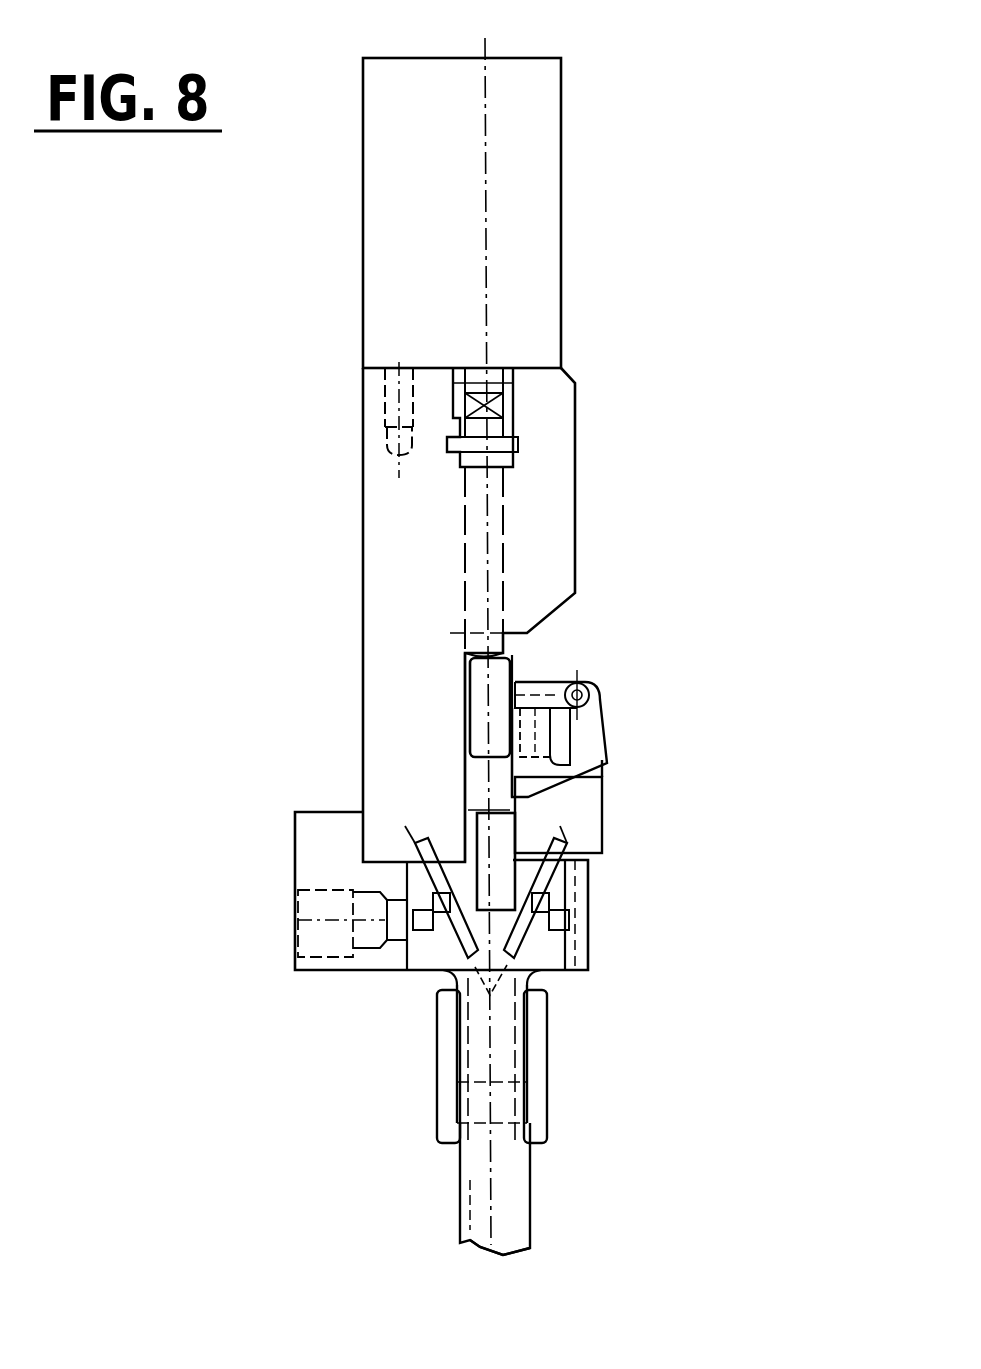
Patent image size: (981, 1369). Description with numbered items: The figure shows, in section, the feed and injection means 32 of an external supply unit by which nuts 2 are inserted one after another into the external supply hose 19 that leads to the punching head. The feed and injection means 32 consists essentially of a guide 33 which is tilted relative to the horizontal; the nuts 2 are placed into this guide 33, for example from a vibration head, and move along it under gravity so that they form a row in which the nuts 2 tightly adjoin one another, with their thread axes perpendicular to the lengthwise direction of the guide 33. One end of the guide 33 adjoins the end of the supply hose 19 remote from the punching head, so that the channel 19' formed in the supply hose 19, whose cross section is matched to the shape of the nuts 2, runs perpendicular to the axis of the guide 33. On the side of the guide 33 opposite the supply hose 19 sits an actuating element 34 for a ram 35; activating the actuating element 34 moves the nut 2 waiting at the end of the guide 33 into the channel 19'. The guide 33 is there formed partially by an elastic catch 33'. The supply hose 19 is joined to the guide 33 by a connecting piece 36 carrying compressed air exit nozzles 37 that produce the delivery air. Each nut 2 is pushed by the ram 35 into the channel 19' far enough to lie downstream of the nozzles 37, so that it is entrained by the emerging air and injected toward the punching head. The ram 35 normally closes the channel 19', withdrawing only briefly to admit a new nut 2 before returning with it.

The nut 2 is at (497, 673).
The supply hose 19 is at (548, 1116).
The channel 19' is at (571, 1273).
The feed and injection means 32 is at (590, 340).
The guide 33 is at (330, 757).
The elastic catch 33' is at (620, 761).
The actuating element 34 is at (522, 158).
The ram 35 is at (484, 520).
The connecting piece 36 is at (625, 930).
The compressed air exit nozzles 37 is at (407, 875).